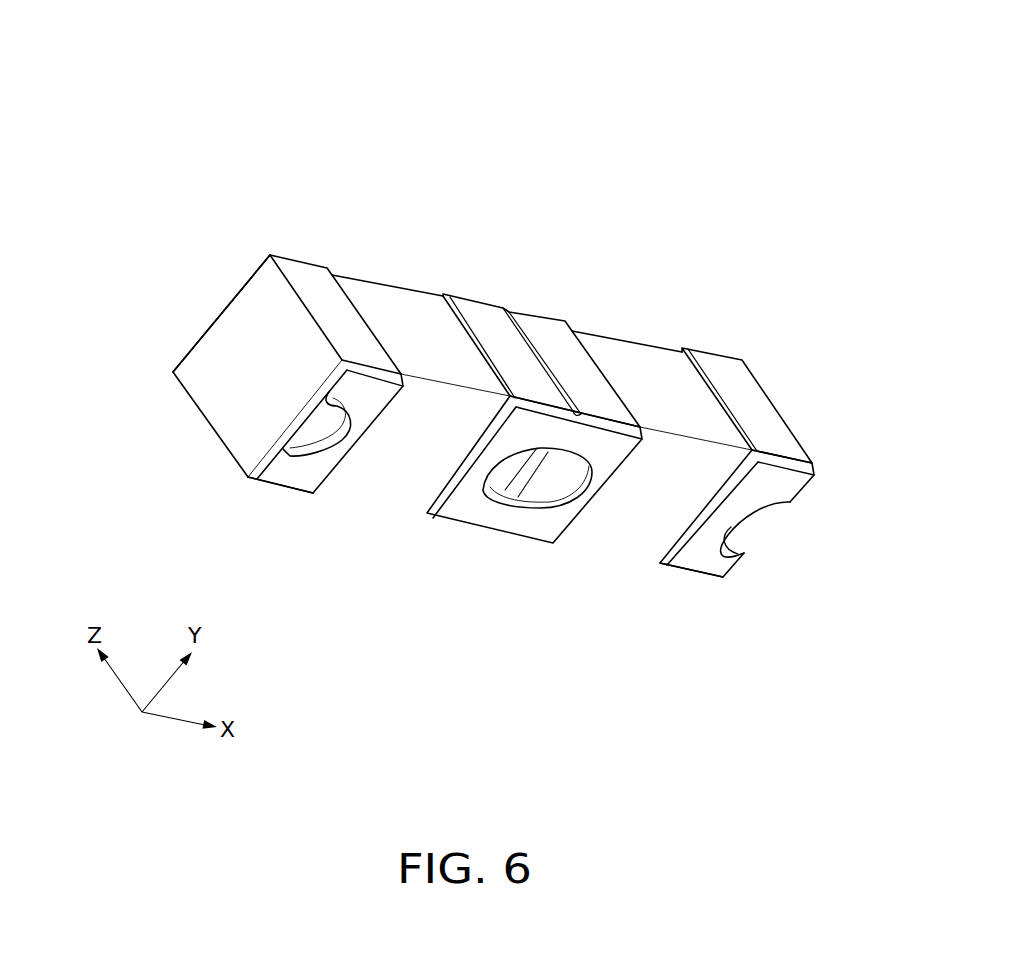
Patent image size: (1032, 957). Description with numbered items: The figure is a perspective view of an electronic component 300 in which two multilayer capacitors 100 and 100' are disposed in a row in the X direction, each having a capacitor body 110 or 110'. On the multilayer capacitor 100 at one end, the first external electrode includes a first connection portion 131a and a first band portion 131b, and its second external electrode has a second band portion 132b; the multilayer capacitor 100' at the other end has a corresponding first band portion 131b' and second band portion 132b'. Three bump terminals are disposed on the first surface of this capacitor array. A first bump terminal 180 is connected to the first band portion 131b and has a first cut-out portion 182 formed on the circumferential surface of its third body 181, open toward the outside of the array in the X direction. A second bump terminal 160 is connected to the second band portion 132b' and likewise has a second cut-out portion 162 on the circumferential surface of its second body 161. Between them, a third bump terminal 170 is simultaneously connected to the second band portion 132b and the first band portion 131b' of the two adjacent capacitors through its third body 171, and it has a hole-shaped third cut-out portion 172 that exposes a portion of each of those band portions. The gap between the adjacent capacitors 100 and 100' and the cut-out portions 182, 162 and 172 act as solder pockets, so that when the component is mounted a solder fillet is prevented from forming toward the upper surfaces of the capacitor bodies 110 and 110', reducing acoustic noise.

The electronic component 300 is at (270, 74).
The multilayer capacitor 100 is at (260, 370).
The capacitor body 110 is at (421, 308).
The first connection portion 131a is at (220, 323).
The first cut-out portion 182 is at (313, 415).
The first band portion 131b is at (234, 424).
The first bump terminal 180 is at (269, 492).
The third body 181 is at (298, 487).
The second band portion 132b is at (539, 372).
The first band portion 131b' is at (551, 383).
The capacitor body 110' is at (662, 360).
The multilayer capacitor 100' is at (748, 461).
The third body 171 is at (462, 507).
The third bump terminal 170 is at (484, 544).
The third cut-out portion 172 is at (535, 498).
The second bump terminal 160 is at (692, 588).
The second body 161 is at (714, 568).
The second cut-out portion 162 is at (742, 542).
The second band portion 132b' is at (786, 529).